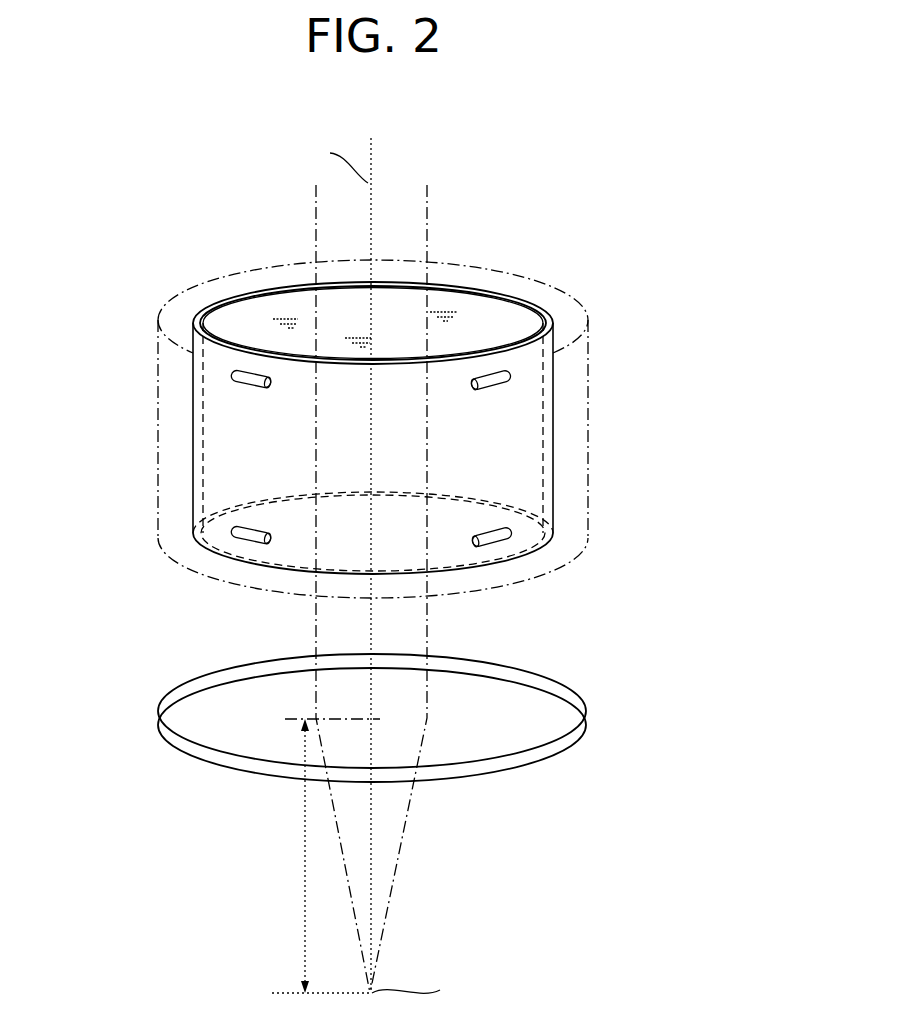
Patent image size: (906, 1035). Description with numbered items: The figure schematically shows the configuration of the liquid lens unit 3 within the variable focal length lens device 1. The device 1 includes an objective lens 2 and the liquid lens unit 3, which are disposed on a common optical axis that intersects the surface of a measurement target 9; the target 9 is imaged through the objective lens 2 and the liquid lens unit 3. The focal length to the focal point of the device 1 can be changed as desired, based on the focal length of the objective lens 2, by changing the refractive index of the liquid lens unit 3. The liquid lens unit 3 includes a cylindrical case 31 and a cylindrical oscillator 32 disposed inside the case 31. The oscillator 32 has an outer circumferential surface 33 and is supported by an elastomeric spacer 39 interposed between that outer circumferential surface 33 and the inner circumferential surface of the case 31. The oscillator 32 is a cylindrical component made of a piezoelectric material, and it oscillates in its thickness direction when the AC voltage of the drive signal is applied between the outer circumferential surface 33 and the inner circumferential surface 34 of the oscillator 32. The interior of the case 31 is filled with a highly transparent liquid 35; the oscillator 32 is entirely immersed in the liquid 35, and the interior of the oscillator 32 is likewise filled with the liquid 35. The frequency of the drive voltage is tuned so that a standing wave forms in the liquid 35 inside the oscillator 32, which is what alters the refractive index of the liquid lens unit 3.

The variable focal length lens device 1 is at (677, 192).
The objective lens 2 is at (152, 703).
The liquid lens unit 3 is at (150, 305).
The measurement target 9 is at (272, 993).
The cylindrical case 31 is at (158, 388).
The cylindrical oscillator 32 is at (193, 460).
The outer circumferential surface 33 is at (540, 302).
The inner circumferential surface 34 is at (491, 325).
The liquid 35 is at (437, 310).
The elastomeric spacer 39 is at (243, 530).